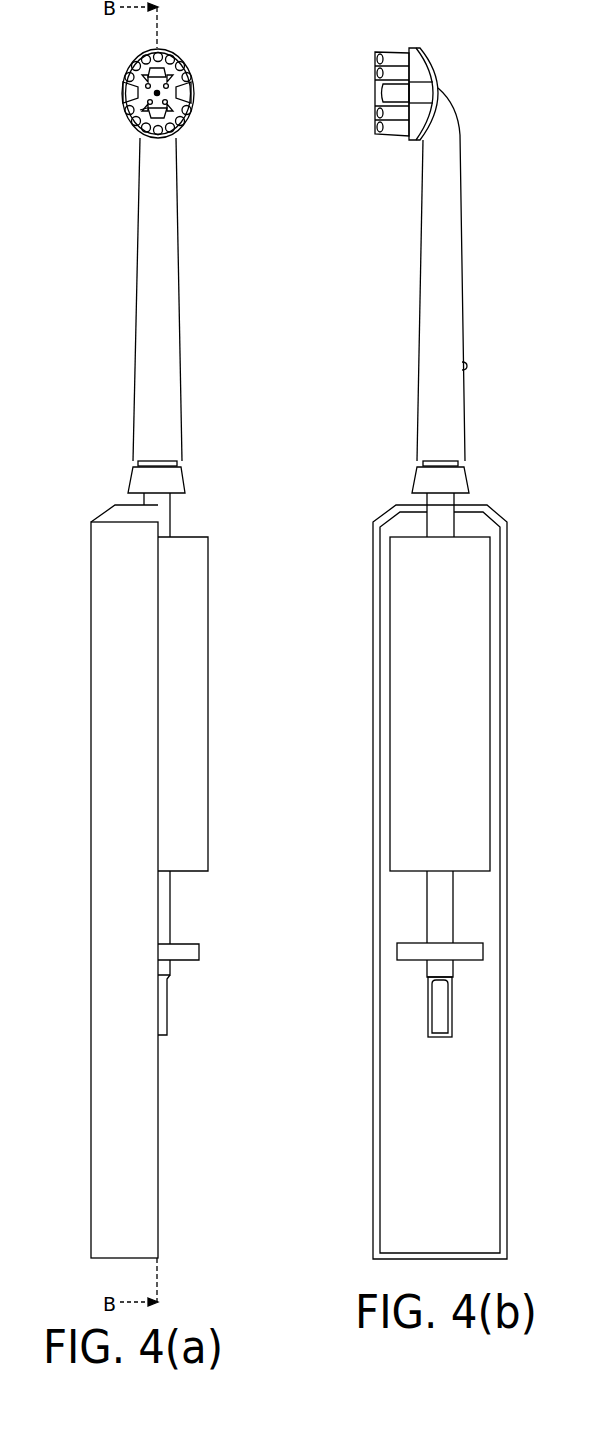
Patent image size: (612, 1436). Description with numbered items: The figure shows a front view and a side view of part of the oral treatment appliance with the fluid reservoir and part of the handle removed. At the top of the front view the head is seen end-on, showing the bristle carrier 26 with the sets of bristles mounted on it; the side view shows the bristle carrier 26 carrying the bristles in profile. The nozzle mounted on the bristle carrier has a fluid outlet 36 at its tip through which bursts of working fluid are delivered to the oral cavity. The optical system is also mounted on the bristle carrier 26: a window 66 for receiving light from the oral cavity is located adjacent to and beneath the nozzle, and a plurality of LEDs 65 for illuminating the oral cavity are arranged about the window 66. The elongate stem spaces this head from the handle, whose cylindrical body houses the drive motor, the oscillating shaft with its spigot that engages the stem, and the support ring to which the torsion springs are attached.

The bristle carrier 26 is at (428, 66).
The fluid outlet 36 is at (170, 112).
The LEDs 65 is at (157, 93).
The window 66 is at (147, 107).